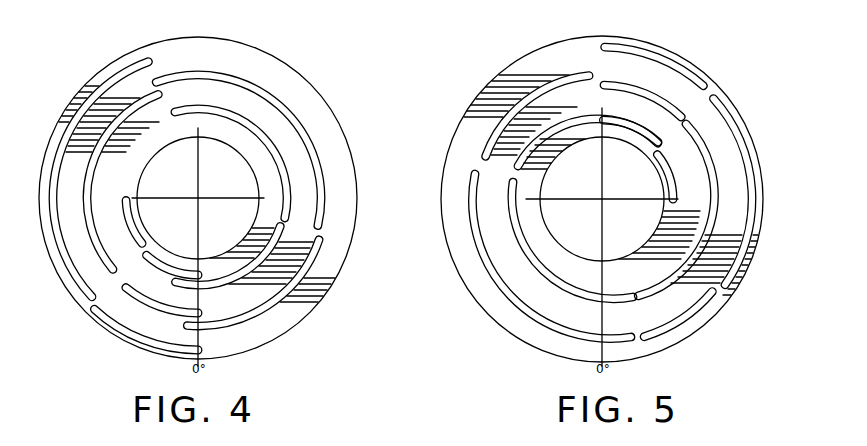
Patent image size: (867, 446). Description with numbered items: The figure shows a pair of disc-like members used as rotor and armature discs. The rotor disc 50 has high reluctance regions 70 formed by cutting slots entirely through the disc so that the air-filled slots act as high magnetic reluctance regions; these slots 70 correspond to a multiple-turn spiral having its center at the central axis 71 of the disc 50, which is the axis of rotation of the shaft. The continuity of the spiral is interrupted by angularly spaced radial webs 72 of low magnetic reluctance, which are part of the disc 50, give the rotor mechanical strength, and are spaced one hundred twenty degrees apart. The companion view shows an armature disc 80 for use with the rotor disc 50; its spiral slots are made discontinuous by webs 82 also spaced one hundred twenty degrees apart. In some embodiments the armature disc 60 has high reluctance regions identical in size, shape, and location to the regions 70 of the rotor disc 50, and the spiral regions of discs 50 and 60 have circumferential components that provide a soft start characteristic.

In FIG. 4, the rotor disc 50 is at (98, 60).
In FIG. 4, the high reluctance regions 70 is at (108, 146).
In FIG. 4, the central axis 71 is at (192, 190).
In FIG. 5, the central axis 71 is at (592, 191).
In FIG. 4, the radial webs 72 is at (142, 58).
In FIG. 5, the armature disc 60 is at (504, 64).
In FIG. 5, the armature disc 80 is at (556, 106).
In FIG. 5, the webs 82 is at (706, 88).